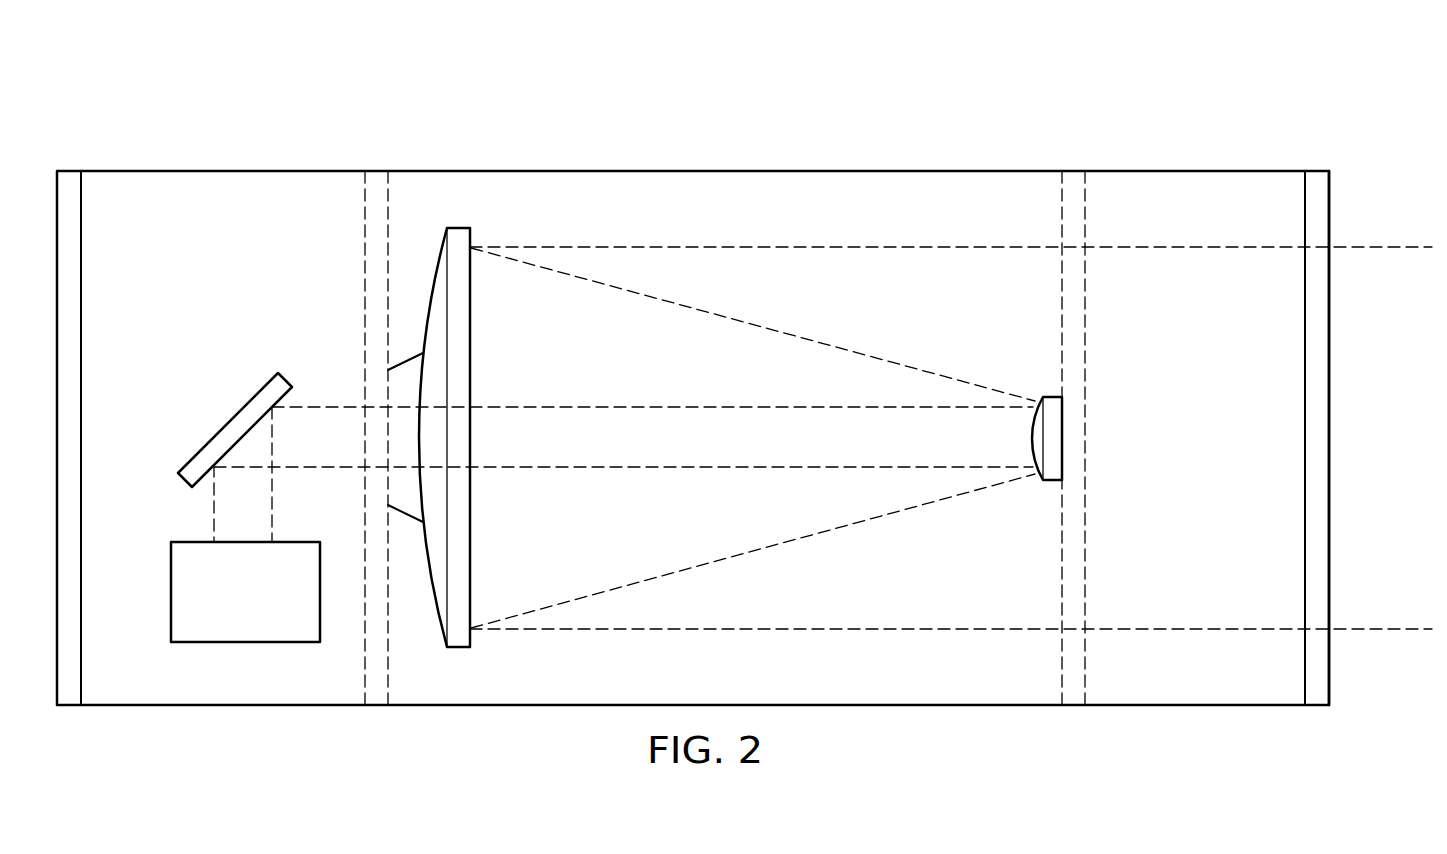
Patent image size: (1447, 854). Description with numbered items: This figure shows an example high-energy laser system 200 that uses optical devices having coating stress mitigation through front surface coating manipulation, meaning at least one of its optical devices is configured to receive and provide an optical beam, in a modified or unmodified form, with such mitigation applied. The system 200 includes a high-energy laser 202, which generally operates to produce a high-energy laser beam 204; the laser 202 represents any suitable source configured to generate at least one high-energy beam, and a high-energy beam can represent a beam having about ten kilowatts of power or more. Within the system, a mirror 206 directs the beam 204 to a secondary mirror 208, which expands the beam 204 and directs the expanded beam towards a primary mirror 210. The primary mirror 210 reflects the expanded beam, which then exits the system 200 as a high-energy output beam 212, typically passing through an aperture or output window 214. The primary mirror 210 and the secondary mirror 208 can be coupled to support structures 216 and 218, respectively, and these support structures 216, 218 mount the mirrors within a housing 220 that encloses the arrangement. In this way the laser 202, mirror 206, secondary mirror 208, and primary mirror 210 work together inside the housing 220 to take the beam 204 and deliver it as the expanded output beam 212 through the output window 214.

The high-energy laser system 200 is at (408, 97).
The high-energy laser 202 is at (171, 590).
The high-energy laser beam 204 is at (212, 505).
The mirror 206 is at (228, 418).
The secondary mirror 208 is at (1050, 483).
The primary mirror 210 is at (458, 228).
The high-energy output beam 212 is at (1393, 245).
The output window 214 is at (1330, 405).
The support structure 216 is at (365, 312).
The support structure 218 is at (1086, 340).
The housing 220 is at (1185, 707).